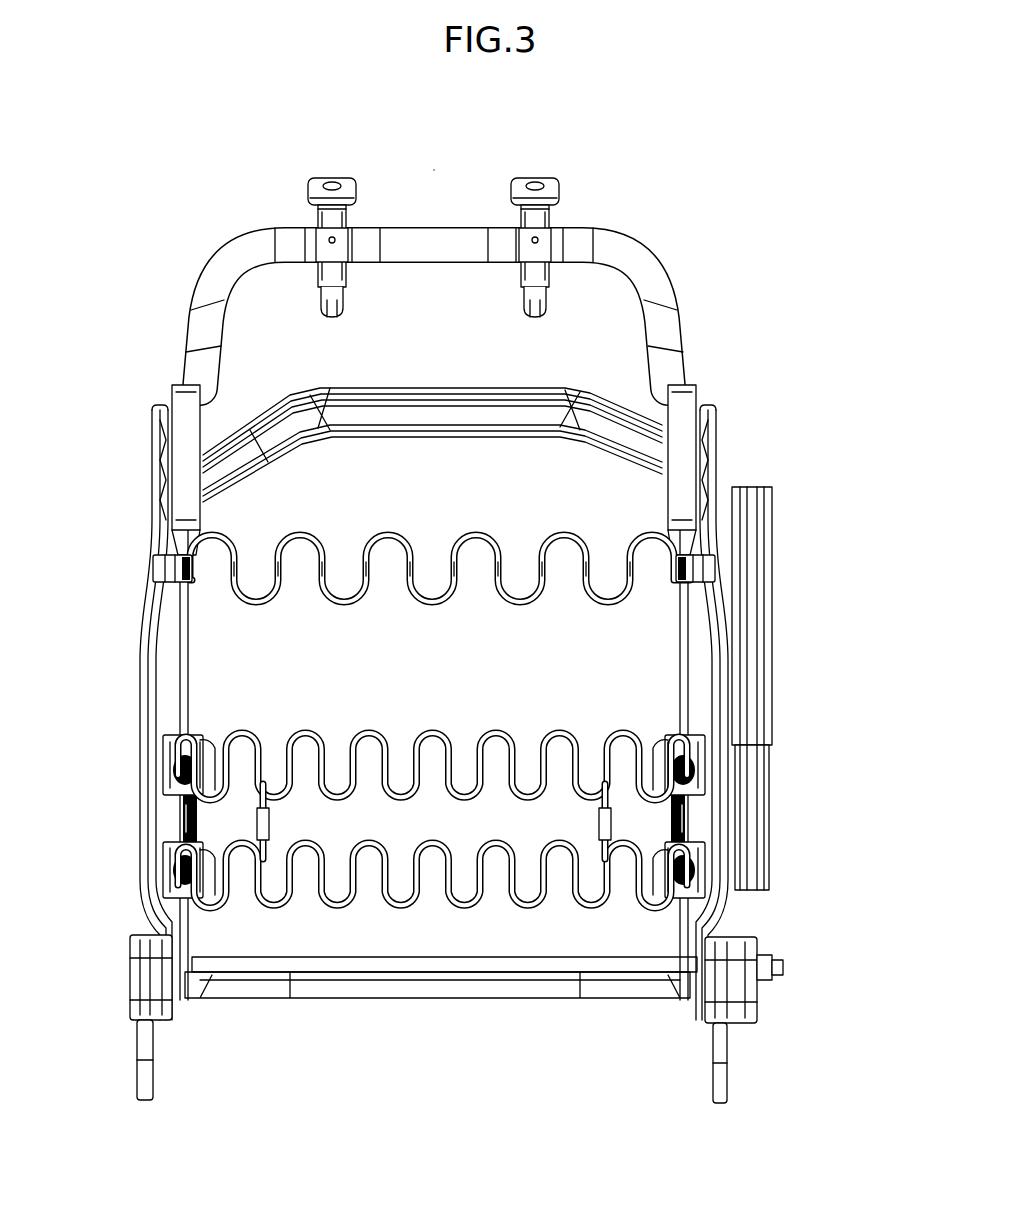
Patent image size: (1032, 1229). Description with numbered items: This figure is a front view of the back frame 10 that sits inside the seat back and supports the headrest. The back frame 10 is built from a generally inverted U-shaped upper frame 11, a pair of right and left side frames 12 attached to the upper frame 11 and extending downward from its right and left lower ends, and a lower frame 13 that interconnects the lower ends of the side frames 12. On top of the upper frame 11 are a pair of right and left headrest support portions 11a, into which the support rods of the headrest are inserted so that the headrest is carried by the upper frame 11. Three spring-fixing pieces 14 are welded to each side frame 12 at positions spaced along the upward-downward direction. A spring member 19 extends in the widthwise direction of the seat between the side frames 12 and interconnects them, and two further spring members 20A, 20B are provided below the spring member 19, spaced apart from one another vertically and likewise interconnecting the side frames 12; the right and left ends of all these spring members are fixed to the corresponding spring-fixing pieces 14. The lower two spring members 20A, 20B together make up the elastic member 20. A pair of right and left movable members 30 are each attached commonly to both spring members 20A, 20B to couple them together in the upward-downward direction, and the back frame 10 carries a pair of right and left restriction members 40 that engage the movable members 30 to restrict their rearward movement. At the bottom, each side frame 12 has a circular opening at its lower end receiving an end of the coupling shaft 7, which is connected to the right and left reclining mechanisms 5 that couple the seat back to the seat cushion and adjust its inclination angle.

The back frame 10 is at (189, 170).
The upper frame 11 is at (617, 245).
The headrest support portions 11a is at (330, 178).
The side frames 12 is at (152, 440).
The spring member 19 is at (477, 532).
The spring-fixing pieces 14 is at (152, 568).
The elastic member 20 is at (543, 866).
The spring member 20A is at (436, 733).
The spring member 20B is at (400, 910).
The movable members 30 is at (240, 730).
The restriction members 40 is at (185, 810).
The reclining mechanisms 5 is at (140, 953).
The coupling shaft 7 is at (385, 963).
The lower frame 13 is at (250, 985).